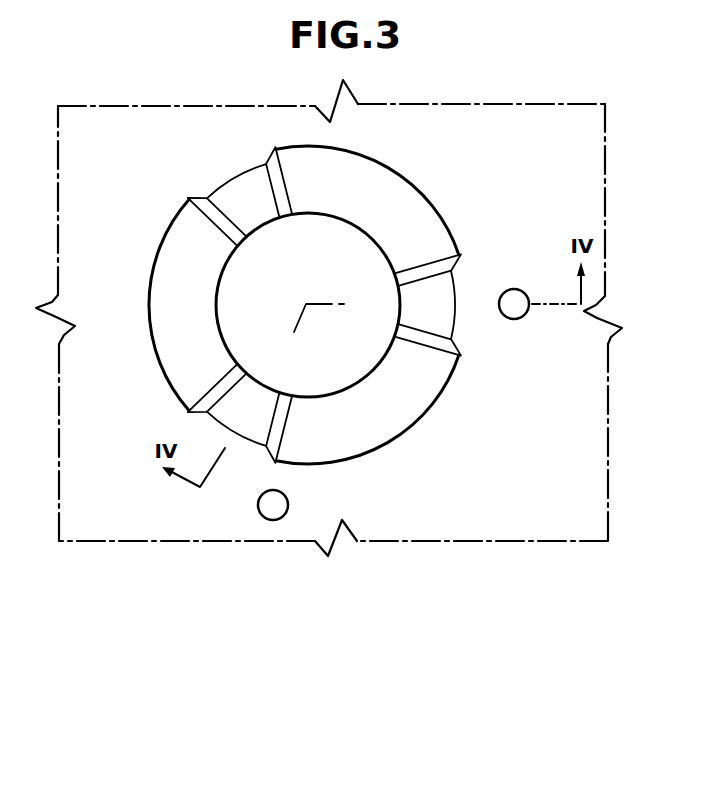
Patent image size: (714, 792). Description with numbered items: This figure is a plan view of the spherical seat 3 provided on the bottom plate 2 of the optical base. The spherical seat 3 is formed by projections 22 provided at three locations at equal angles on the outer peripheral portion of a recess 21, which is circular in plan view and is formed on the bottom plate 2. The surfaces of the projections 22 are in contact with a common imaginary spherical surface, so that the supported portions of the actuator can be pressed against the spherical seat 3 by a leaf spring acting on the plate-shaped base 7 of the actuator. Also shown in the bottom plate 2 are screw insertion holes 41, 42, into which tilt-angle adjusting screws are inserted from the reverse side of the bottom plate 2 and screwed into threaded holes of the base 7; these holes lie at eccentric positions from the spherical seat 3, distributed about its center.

The bottom plate 2 is at (509, 512).
The spherical seat 3 is at (245, 192).
The base 7 is at (260, 303).
The recess 21 is at (358, 360).
The projections 22 is at (205, 200).
The screw insertion hole 41 is at (521, 318).
The screw insertion hole 42 is at (277, 520).